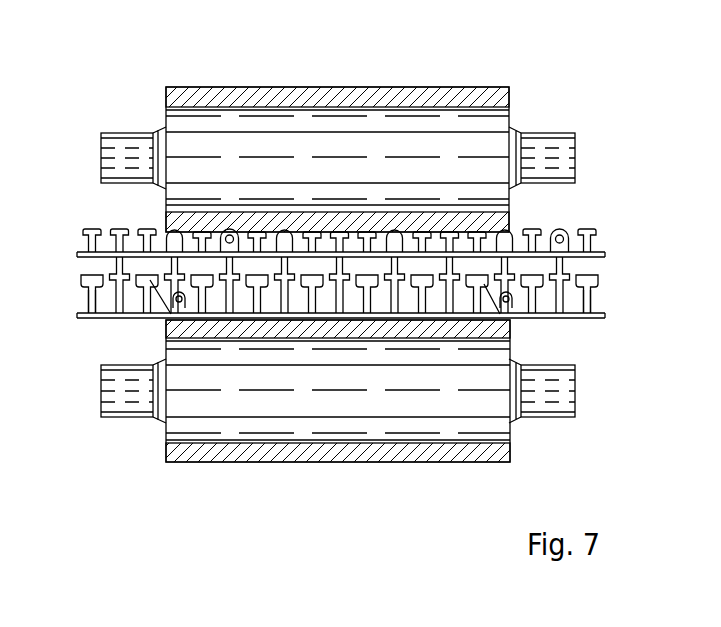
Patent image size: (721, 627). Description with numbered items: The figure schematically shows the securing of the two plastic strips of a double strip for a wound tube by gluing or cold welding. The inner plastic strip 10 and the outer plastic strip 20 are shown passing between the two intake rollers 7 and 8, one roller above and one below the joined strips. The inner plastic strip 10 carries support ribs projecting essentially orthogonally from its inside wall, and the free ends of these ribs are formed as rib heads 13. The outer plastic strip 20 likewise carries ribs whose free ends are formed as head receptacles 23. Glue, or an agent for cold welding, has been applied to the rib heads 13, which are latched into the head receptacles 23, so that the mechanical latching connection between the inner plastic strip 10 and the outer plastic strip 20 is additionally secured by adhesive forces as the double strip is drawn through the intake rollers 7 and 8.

The intake roller 7 is at (343, 140).
The intake roller 8 is at (344, 412).
The inner plastic strip 10 is at (598, 320).
The rib head 13 is at (86, 302).
The outer plastic strip 20 is at (104, 257).
The head receptacle 23 is at (84, 272).